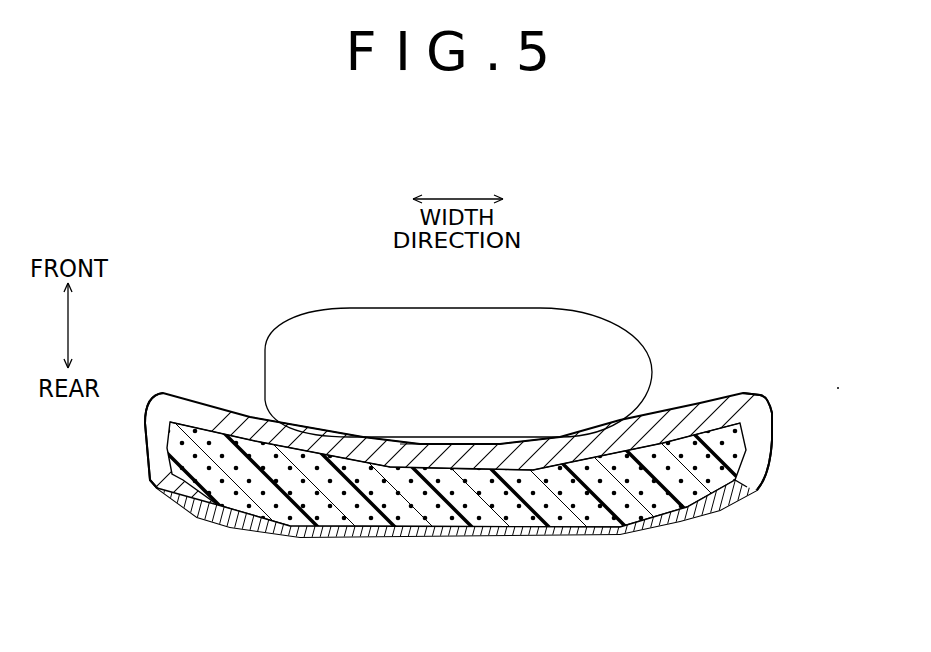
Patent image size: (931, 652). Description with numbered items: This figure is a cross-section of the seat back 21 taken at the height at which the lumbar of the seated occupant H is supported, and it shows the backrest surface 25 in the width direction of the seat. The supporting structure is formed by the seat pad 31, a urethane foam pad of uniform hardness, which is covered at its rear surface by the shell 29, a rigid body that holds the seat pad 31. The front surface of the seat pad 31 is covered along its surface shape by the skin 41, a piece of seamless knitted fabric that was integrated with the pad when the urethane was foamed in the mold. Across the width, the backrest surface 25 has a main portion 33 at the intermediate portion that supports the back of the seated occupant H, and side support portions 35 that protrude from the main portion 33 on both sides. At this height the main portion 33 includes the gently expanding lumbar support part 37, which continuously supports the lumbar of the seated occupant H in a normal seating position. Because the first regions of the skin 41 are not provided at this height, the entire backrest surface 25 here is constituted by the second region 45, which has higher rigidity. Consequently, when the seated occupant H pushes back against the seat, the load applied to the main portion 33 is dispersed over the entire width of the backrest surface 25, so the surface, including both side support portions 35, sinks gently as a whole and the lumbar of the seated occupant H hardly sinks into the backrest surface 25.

The seat back 21 is at (768, 453).
The backrest surface 25 is at (482, 441).
The shell 29 is at (568, 540).
The seat pad 31 is at (637, 517).
The main portion 33 is at (423, 440).
The side support portions 35 is at (205, 404).
The lumbar support part 37 is at (396, 437).
The skin 41 is at (233, 420).
The second region 45 is at (672, 421).
The seated occupant H is at (583, 312).